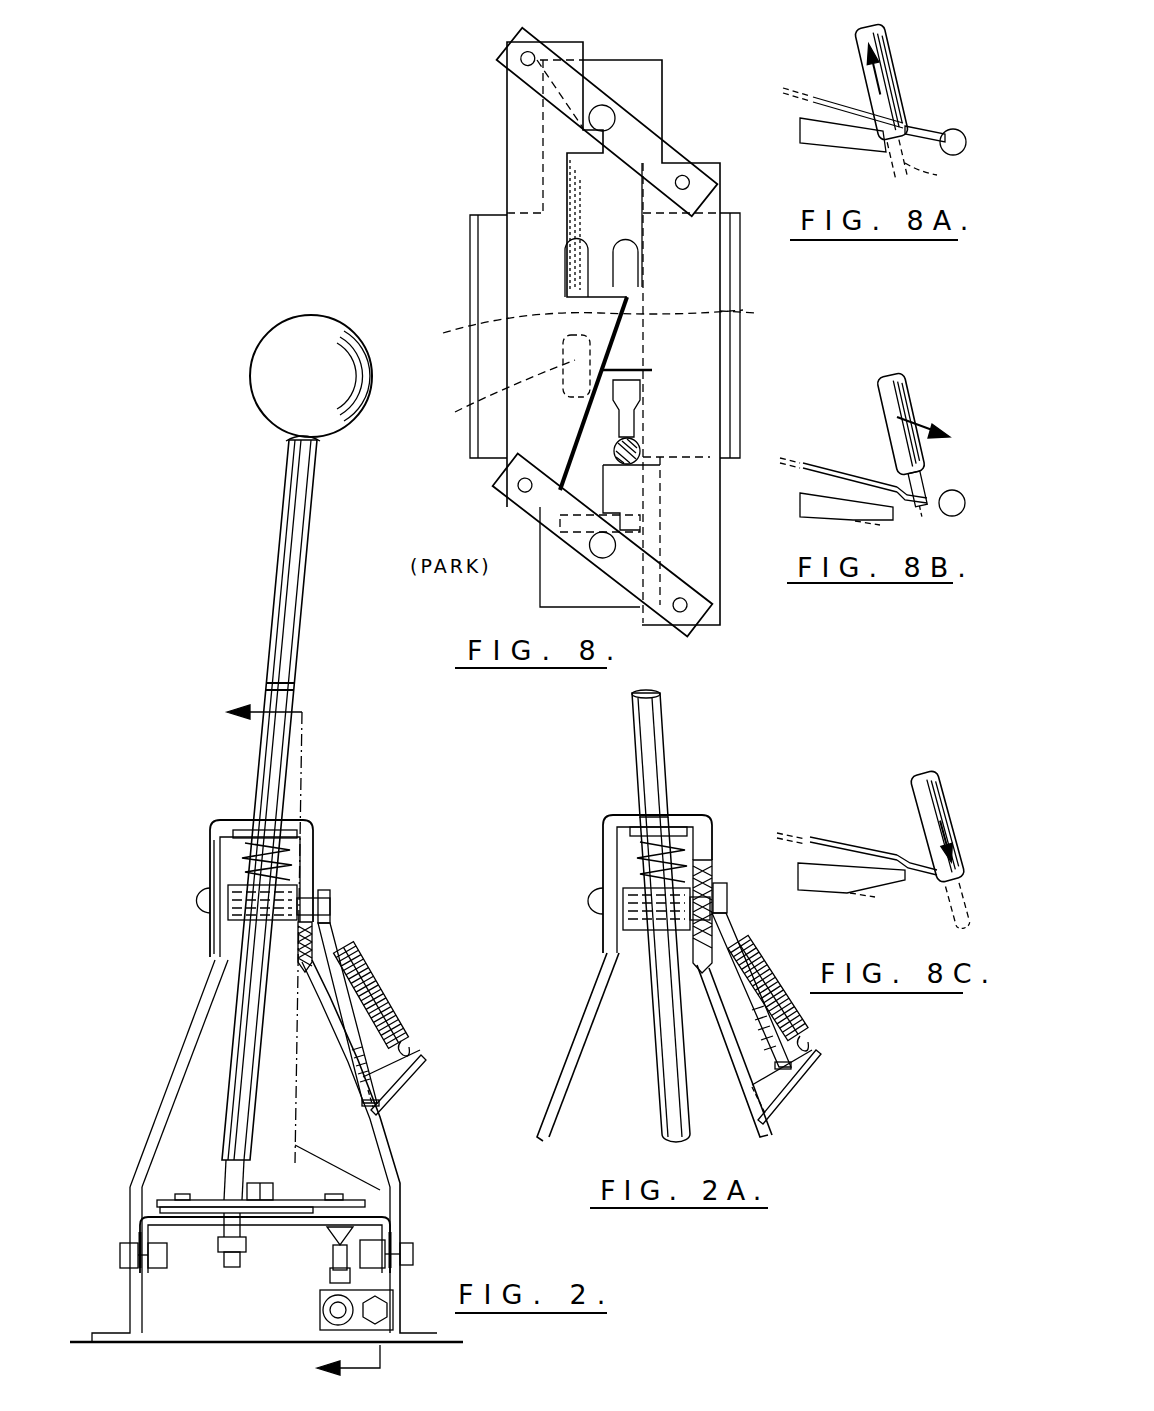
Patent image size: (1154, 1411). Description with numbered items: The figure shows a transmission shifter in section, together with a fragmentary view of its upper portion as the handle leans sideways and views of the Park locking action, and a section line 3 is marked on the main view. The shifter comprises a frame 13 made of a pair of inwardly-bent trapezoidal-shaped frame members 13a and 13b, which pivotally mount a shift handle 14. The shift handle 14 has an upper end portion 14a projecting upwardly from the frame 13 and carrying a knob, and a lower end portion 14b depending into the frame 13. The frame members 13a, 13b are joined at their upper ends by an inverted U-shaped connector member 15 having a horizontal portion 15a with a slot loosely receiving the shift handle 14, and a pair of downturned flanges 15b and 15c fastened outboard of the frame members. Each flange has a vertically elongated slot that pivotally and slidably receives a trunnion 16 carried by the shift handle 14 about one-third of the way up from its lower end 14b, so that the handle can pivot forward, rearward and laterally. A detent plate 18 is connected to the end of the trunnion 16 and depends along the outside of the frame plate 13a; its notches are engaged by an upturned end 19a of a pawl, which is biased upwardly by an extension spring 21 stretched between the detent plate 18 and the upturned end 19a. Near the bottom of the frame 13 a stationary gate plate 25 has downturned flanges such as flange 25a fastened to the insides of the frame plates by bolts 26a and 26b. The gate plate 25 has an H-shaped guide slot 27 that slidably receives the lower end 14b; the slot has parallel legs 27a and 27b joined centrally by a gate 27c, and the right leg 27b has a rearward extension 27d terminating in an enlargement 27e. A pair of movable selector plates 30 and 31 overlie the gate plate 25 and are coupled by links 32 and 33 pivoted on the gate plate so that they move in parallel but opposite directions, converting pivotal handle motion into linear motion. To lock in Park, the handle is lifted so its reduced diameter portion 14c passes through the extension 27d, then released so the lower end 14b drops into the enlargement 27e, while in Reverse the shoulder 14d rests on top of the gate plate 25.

In FIG. 2, the section line 3- 3 is at (291, 1042).
In FIG. 2, the frame 13 is at (183, 1080).
In FIG. 2, the frame member 13a is at (392, 1157).
In FIG. 2A, the frame member 13a is at (823, 1152).
In FIG. 2, the frame member 13b is at (143, 1152).
In FIG. 2, the shift handle 14 is at (268, 778).
In FIG. 2, the upper end portion 14a is at (283, 582).
In FIG. 2A, the upper end portion 14a is at (665, 740).
In FIG. 2, the lower end portion 14b is at (225, 1183).
In FIG. 2A, the lower end portion 14b is at (660, 1067).
In FIG. 8, the lower end portion 14b is at (647, 457).
In FIG. 8A, the lower end portion 14b is at (880, 58).
In FIG. 8C, the lower end portion 14b is at (935, 800).
In FIG. 2, the reduced diameter portion 14c is at (218, 1256).
In FIG. 8A, the reduced diameter portion 14c is at (987, 182).
In FIG. 2, the shoulder 14d is at (233, 1243).
In FIG. 8B, the shoulder 14d is at (928, 478).
In FIG. 2, the connector member 15 is at (315, 845).
In FIG. 2, the horizontal portion 15a is at (296, 824).
In FIG. 2, the downturned flange 15b is at (318, 883).
In FIG. 2, the downturned flange 15c is at (212, 858).
In FIG. 2, the trunnion 16 is at (245, 905).
In FIG. 2A, the trunnion 16 is at (658, 910).
In FIG. 2, the detent plate 18 is at (357, 1023).
In FIG. 2A, the detent plate 18 is at (797, 1025).
In FIG. 2, the upturned end 19a is at (393, 1080).
In FIG. 2A, the upturned end 19a is at (777, 1080).
In FIG. 2, the extension spring 21 is at (381, 984).
In FIG. 2A, the extension spring 21 is at (765, 952).
In FIG. 2, the gate plate 25 is at (157, 1222).
In FIG. 8, the gate plate 25 is at (550, 585).
In FIG. 8A, the gate plate 25 is at (850, 142).
In FIG. 8B, the gate plate 25 is at (865, 511).
In FIG. 8C, the gate plate 25 is at (840, 886).
In FIG. 2, the downturned flange 25a is at (388, 1243).
In FIG. 2, the bolt 26a is at (413, 1253).
In FIG. 2, the bolt 26b is at (105, 1258).
In FIG. 8, the guide slot 27 is at (580, 272).
In FIG. 8, the leg 27a is at (443, 422).
In FIG. 8, the leg 27b is at (800, 315).
In FIG. 8B, the leg 27b is at (825, 472).
In FIG. 8C, the leg 27b is at (823, 840).
In FIG. 8, the gate 27c is at (443, 340).
In FIG. 8, the rearward extension 27d is at (632, 420).
In FIG. 8A, the rearward extension 27d is at (918, 130).
In FIG. 8C, the rearward extension 27d is at (905, 862).
In FIG. 8A, the enlargement 27e is at (980, 105).
In FIG. 8B, the enlargement 27e is at (983, 542).
In FIG. 8, the selector plate 30 is at (707, 573).
In FIG. 8, the selector plate 31 is at (477, 215).
In FIG. 8, the link 32 is at (637, 130).
In FIG. 8, the link 33 is at (630, 583).